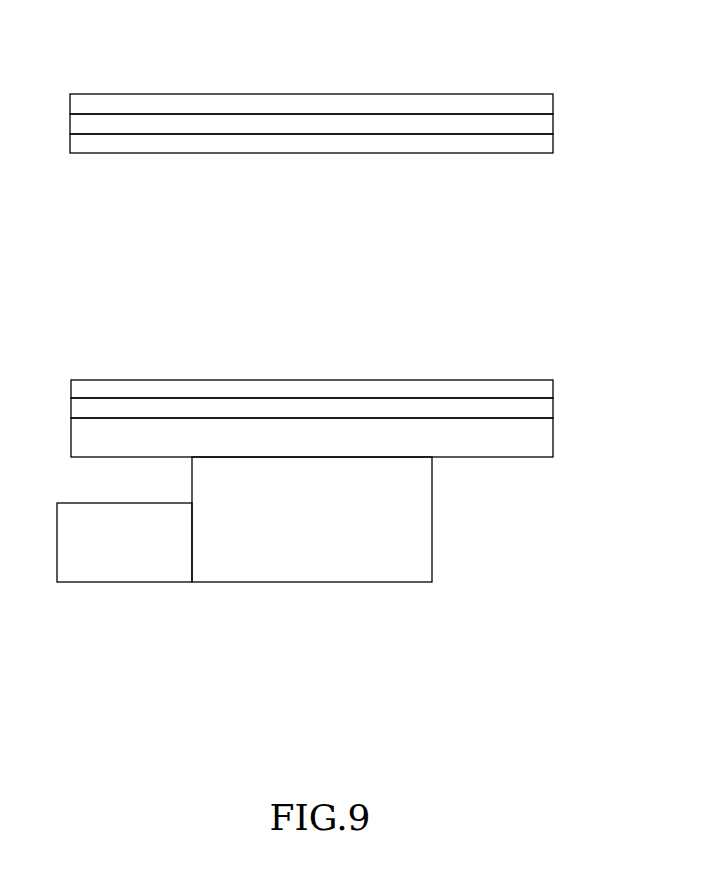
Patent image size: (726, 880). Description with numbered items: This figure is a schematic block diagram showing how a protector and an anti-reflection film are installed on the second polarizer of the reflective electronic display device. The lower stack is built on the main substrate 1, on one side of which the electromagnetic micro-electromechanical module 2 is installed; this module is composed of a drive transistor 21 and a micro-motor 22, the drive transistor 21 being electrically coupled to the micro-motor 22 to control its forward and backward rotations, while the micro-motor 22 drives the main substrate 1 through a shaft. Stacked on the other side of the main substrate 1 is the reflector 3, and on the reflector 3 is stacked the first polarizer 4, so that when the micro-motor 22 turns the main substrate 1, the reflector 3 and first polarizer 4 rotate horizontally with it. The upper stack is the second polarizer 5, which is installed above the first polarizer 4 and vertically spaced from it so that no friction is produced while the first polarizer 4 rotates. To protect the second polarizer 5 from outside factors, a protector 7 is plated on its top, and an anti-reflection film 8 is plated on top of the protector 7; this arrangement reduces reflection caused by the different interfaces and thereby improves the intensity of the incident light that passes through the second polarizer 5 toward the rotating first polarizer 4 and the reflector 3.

The main substrate 1 is at (553, 437).
The electromagnetic micro-electromechanical module 2 is at (244, 589).
The drive transistor 21 is at (128, 582).
The micro-motor 22 is at (312, 561).
The reflector 3 is at (553, 407).
The first polarizer 4 is at (553, 388).
The second polarizer 5 is at (553, 143).
The protector 7 is at (553, 123).
The anti-reflection film 8 is at (553, 104).